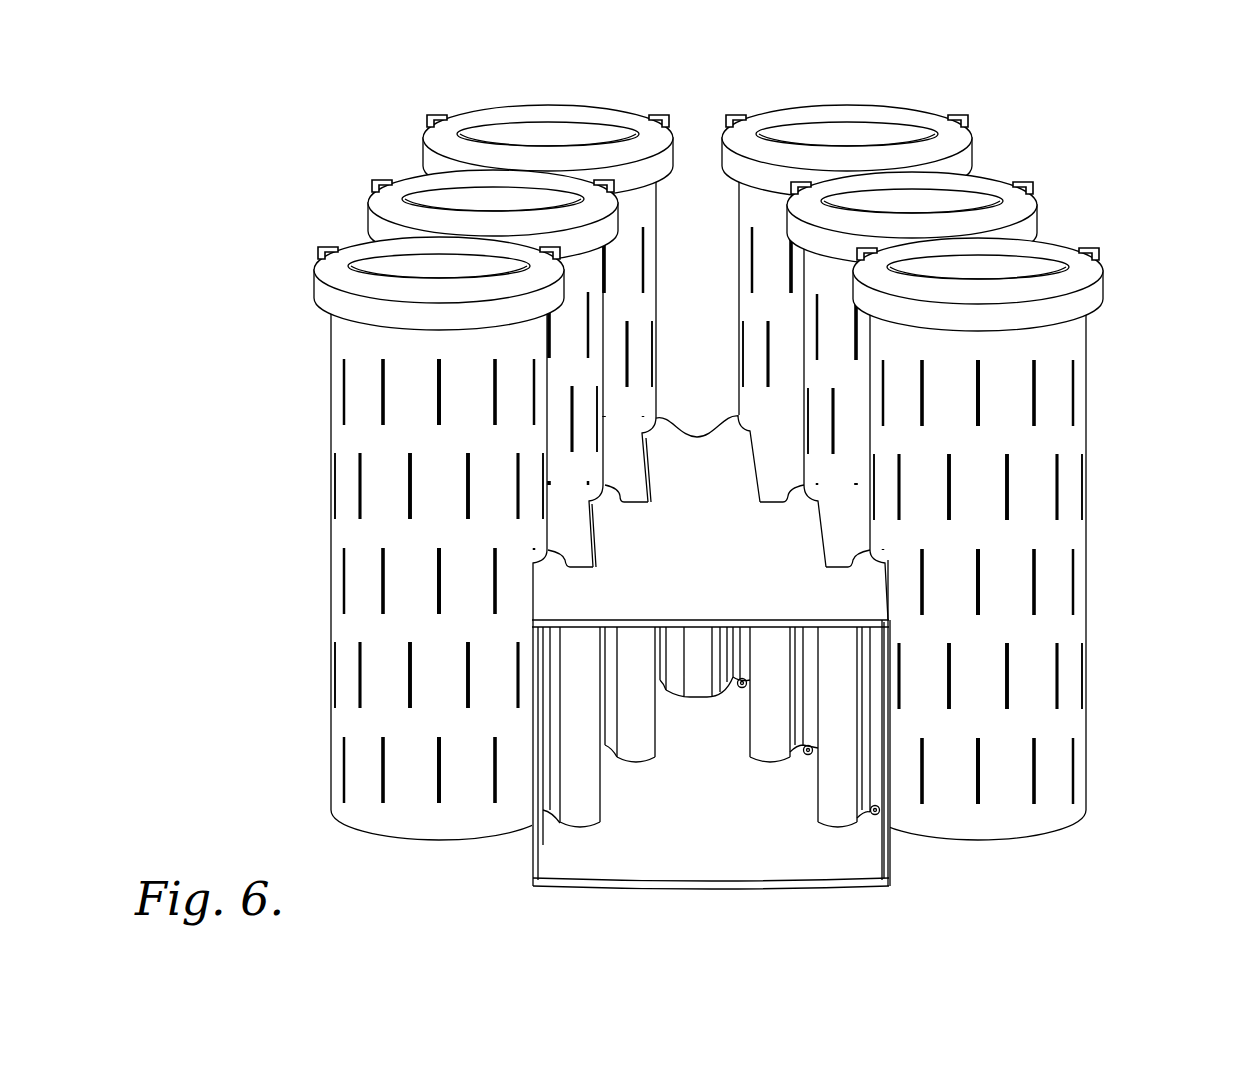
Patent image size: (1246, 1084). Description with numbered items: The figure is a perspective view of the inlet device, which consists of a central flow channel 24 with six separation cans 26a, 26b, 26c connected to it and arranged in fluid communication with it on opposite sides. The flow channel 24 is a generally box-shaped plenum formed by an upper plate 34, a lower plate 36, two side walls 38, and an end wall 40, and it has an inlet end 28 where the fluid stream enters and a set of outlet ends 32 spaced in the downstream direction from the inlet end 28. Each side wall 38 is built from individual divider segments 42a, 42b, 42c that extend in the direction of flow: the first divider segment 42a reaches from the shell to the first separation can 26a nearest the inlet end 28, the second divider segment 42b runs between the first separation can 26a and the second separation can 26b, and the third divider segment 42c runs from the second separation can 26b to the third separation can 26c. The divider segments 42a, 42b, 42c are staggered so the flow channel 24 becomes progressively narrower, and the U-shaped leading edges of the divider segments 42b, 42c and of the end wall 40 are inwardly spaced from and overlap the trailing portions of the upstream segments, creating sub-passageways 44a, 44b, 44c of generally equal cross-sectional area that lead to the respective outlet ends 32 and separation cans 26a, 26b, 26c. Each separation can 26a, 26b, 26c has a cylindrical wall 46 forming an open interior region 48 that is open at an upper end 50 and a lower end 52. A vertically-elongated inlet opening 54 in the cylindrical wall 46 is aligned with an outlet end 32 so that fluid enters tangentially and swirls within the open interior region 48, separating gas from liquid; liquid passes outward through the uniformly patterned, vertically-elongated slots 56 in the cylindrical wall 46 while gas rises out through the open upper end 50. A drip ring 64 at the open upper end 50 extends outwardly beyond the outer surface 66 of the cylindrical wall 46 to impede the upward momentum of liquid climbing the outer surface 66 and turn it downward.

The flow channel 24 is at (710, 725).
The first separation can 26a is at (696, 555).
The second separation can 26b is at (400, 165).
The third separation can 26c is at (467, 105).
The inlet end 28 is at (712, 918).
The outlet ends 32 is at (807, 758).
The upper plate 34 is at (687, 512).
The lower plate 36 is at (623, 870).
The side walls 38 is at (538, 845).
The end wall 40 is at (700, 647).
The first divider segment 42a is at (888, 720).
The second divider segment 42b is at (840, 650).
The third divider segment 42c is at (772, 645).
The first sub-passageway 44a is at (557, 838).
The second sub-passageway 44b is at (608, 770).
The third sub-passageway 44c is at (665, 708).
The cylindrical wall 46 is at (1072, 530).
The open interior region 48 is at (1018, 262).
The open upper end 50 is at (1052, 262).
The open lower end 52 is at (1038, 833).
The inlet opening 54 is at (873, 785).
The slots 56 is at (1085, 647).
The drip ring 64 is at (1085, 296).
The outer surface 66 is at (343, 347).